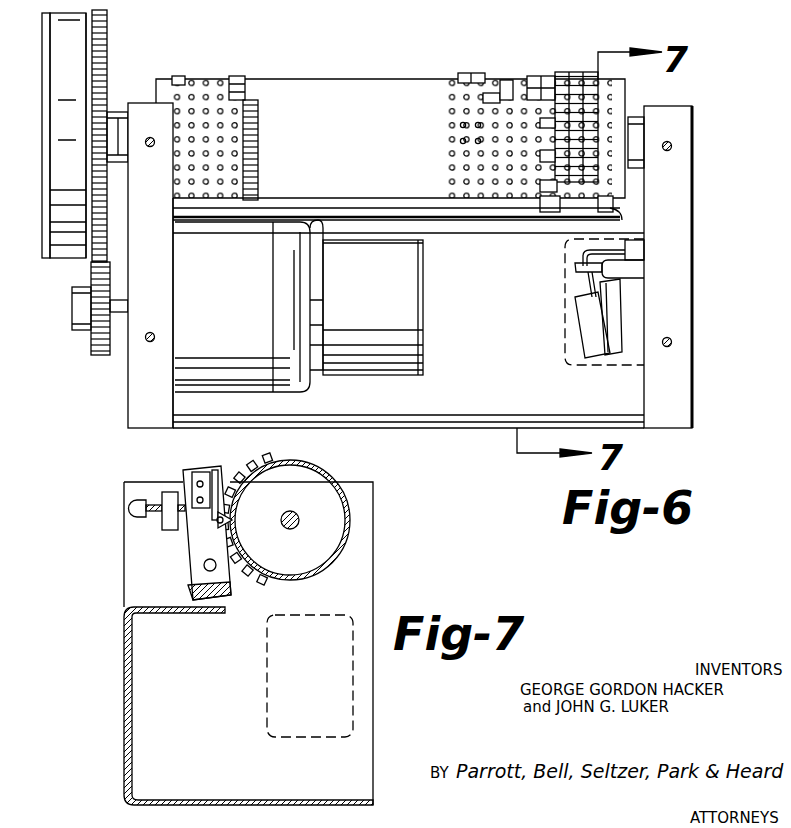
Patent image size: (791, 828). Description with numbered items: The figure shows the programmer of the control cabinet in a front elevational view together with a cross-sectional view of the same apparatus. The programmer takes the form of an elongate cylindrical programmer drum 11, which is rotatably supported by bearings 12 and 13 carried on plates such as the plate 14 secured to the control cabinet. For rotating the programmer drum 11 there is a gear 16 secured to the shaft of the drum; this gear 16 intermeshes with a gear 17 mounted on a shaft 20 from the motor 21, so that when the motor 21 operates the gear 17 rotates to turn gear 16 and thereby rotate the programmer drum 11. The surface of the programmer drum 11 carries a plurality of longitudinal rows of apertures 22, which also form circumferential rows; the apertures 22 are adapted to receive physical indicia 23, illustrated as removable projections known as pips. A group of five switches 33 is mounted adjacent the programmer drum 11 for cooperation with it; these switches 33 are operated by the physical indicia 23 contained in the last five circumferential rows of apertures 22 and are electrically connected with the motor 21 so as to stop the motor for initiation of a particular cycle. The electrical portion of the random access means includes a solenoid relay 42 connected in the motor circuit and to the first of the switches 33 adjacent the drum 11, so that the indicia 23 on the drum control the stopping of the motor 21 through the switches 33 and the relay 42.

In FIG. 6, the programmer drum 11 is at (615, 100).
In FIG. 7, the programmer drum 11 is at (315, 472).
In FIG. 6, the bearing 12 is at (637, 128).
In FIG. 6, the bearing 13 is at (126, 118).
In FIG. 7, the plate 14 is at (212, 702).
In FIG. 6, the gear 16 is at (100, 31).
In FIG. 6, the gear 17 is at (92, 345).
In FIG. 6, the shaft 20 is at (120, 318).
In FIG. 6, the motor 21 is at (250, 302).
In FIG. 6, the apertures 22 is at (475, 142).
In FIG. 6, the physical indicia 23 is at (478, 78).
In FIG. 7, the physical indicia 23 is at (296, 588).
In FIG. 7, the switches 33 is at (200, 478).
In FIG. 6, the solenoid relay 42 is at (554, 336).
In FIG. 7, the solenoid relay 42 is at (300, 748).